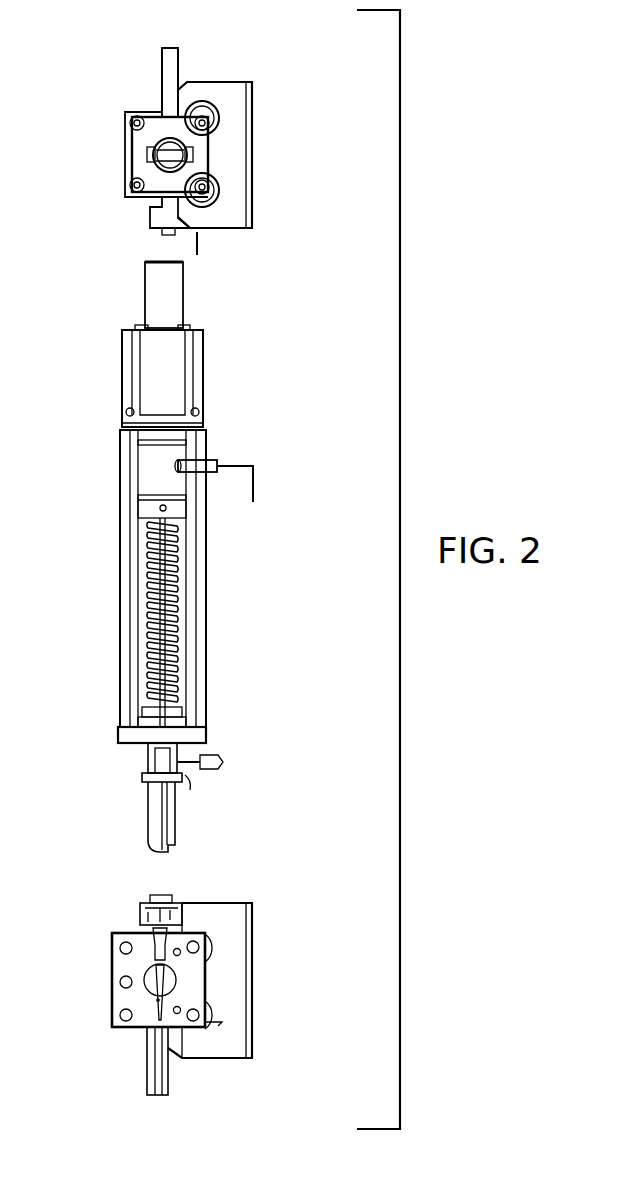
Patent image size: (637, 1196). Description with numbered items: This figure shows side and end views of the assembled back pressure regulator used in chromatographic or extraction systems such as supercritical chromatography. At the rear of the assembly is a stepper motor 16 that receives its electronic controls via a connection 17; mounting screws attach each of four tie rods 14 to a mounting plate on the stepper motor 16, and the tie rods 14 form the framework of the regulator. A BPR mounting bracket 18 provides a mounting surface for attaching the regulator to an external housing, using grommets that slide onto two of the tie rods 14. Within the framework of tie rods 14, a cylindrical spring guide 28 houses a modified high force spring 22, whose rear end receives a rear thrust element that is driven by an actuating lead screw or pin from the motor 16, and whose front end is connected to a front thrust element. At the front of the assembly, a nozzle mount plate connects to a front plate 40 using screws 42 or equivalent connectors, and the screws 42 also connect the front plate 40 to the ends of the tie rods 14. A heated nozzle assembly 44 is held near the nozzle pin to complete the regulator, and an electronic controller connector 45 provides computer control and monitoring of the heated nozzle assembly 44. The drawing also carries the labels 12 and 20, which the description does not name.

The mounting plate 12 is at (132, 110).
The tie rods 14 is at (198, 572).
The stepper motor 16 is at (122, 373).
The connection 17 is at (160, 47).
The BPR mounting bracket 18 is at (237, 100).
The fastener 20 is at (200, 107).
The modified high force spring 22 is at (152, 685).
The cylindrical spring guide 28 is at (182, 685).
The front plate 40 is at (118, 730).
The screws 42 is at (126, 1012).
The heated nozzle assembly 44 is at (148, 763).
The electronic controller connector 45 is at (150, 900).